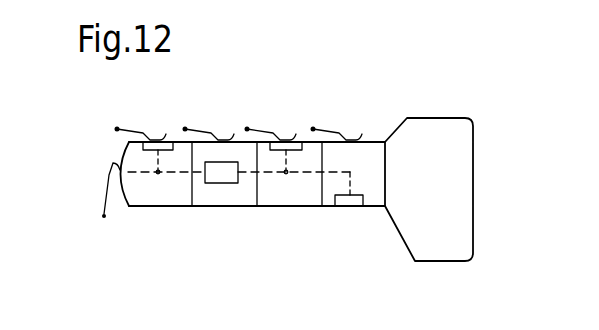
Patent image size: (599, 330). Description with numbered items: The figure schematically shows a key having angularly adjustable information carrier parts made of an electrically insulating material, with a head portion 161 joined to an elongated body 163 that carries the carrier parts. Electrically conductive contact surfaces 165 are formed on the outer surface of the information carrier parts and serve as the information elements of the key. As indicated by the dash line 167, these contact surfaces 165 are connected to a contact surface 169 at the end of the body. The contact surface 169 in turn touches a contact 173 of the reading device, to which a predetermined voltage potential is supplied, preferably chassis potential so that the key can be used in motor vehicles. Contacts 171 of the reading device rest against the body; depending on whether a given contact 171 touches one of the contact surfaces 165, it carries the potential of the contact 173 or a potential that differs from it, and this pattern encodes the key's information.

The head portion 161 is at (467, 110).
The housing body 163 is at (178, 195).
The contact surfaces 165 is at (172, 143).
The dash line 167 is at (303, 173).
The contact surface 169 is at (122, 159).
The contacts 171 is at (157, 139).
The contact 173 is at (106, 198).